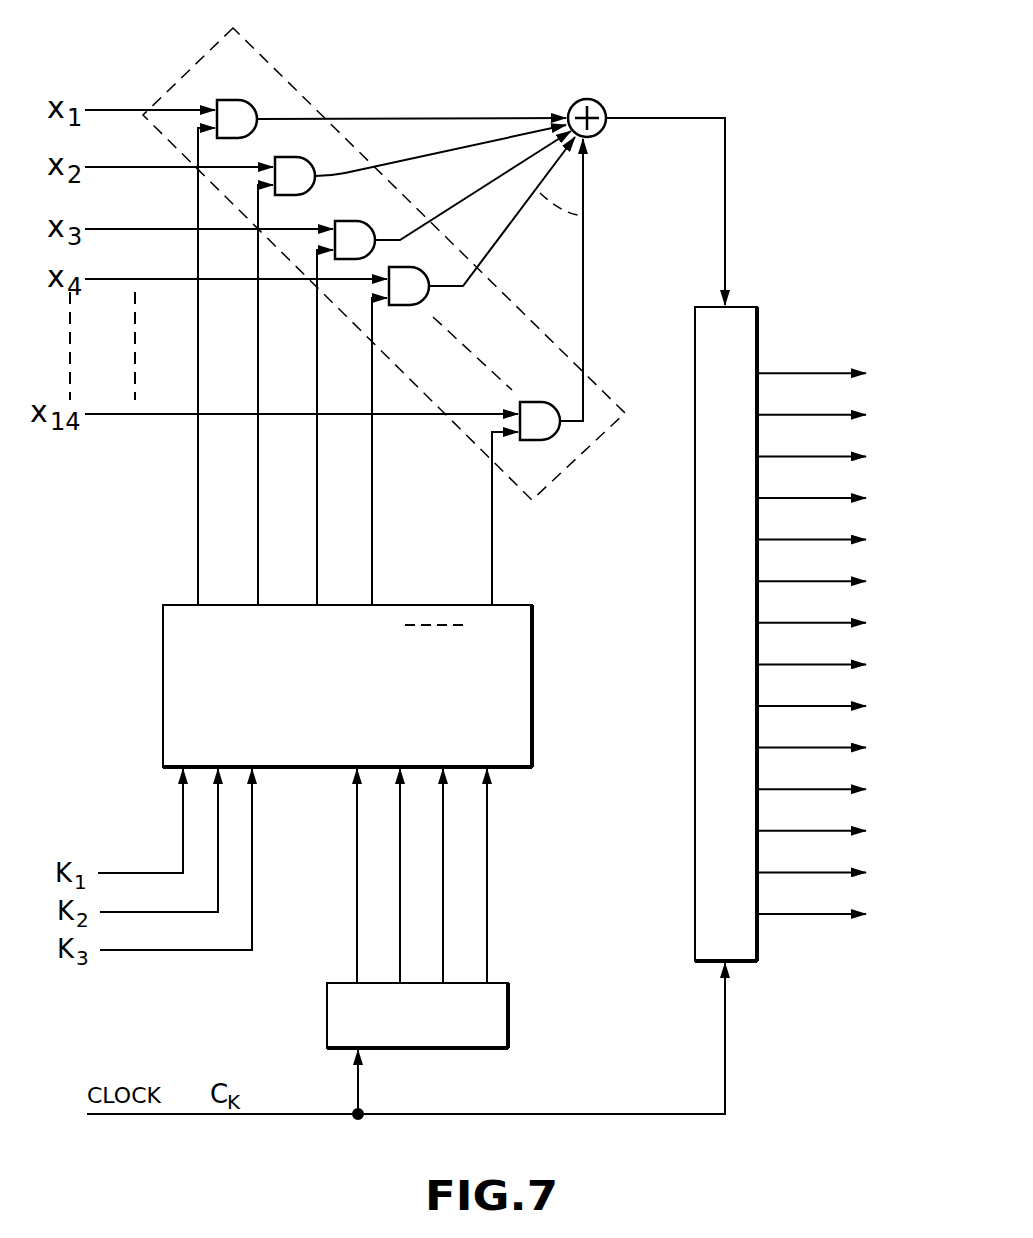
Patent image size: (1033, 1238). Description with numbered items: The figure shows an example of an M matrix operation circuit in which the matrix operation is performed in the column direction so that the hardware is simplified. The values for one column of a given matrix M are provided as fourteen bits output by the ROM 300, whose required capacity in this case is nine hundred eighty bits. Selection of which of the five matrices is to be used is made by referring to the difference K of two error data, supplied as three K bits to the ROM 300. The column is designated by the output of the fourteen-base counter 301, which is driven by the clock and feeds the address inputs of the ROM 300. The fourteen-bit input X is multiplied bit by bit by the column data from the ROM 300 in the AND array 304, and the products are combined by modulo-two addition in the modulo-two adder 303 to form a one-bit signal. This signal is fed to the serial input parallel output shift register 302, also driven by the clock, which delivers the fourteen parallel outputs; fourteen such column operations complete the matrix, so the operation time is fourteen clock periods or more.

The ROM 300 is at (185, 683).
The 14-base counter 301 is at (508, 1003).
The serial input parallel output shift register 302 is at (712, 513).
The modulo 2 adder 303 is at (600, 102).
The AND array 304 is at (263, 55).